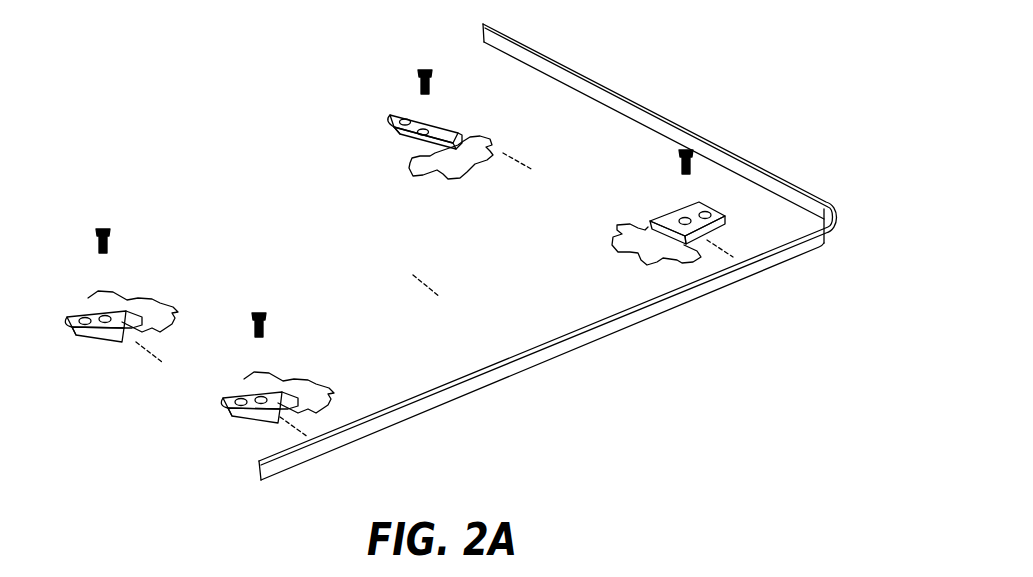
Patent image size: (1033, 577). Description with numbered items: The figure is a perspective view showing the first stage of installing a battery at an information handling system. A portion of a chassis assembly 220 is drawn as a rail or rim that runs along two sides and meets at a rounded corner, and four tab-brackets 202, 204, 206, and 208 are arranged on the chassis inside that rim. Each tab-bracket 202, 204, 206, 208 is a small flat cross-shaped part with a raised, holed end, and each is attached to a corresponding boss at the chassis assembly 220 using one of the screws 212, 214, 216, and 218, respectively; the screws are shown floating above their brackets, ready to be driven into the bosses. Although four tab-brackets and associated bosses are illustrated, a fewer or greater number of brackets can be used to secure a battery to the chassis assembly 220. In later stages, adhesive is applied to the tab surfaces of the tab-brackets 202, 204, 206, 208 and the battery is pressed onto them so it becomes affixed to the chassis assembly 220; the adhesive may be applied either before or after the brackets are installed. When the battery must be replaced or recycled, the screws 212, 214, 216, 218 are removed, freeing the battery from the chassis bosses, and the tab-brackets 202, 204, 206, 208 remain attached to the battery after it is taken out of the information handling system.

The tab-bracket 202 is at (467, 153).
The tab-bracket 204 is at (640, 247).
The tab-bracket 206 is at (298, 388).
The tab-bracket 208 is at (152, 313).
The screw 212 is at (424, 68).
The screw 214 is at (687, 149).
The screw 216 is at (259, 311).
The screw 218 is at (104, 228).
The chassis assembly 220 is at (580, 123).